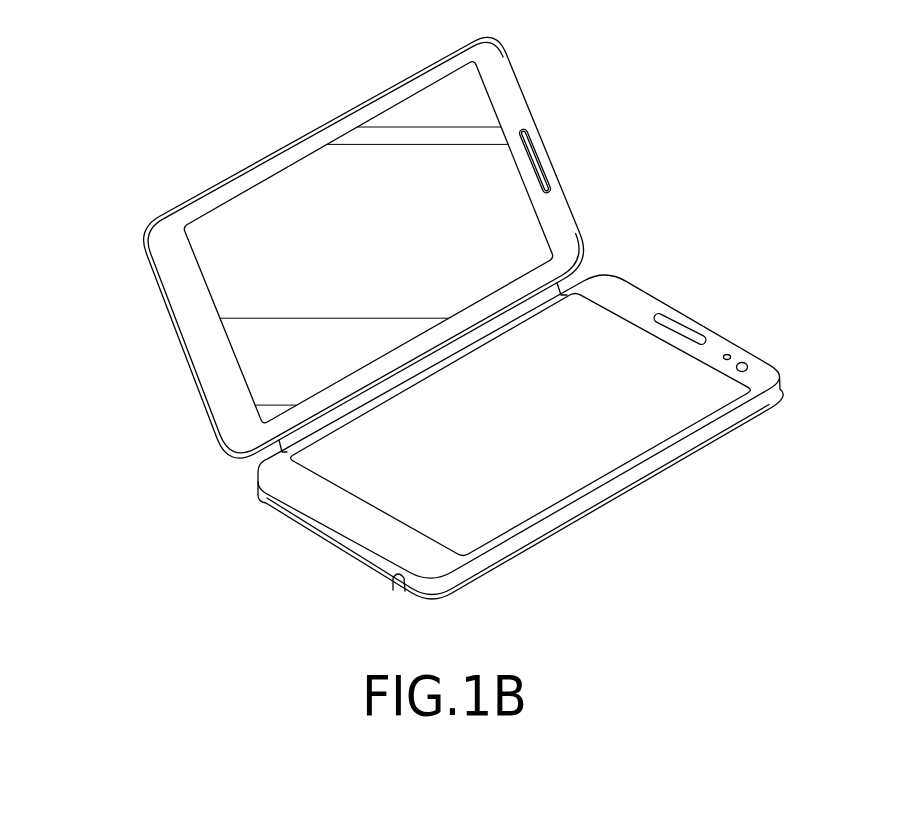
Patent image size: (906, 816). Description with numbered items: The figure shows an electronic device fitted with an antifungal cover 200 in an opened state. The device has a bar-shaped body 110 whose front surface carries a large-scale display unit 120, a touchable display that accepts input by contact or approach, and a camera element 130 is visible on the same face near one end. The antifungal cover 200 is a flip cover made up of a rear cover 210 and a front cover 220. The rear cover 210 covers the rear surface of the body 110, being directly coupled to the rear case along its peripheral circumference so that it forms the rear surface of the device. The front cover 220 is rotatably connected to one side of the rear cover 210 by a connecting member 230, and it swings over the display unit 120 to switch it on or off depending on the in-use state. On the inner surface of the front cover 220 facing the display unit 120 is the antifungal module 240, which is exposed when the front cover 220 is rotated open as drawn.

The body 110 is at (647, 470).
The display unit 120 is at (500, 518).
The camera 130 is at (747, 363).
The antifungal cover 200 is at (430, 342).
The rear cover 210 is at (310, 538).
The front cover 220 is at (223, 418).
The connecting member 230 is at (280, 438).
The antifungal module 240 is at (308, 187).